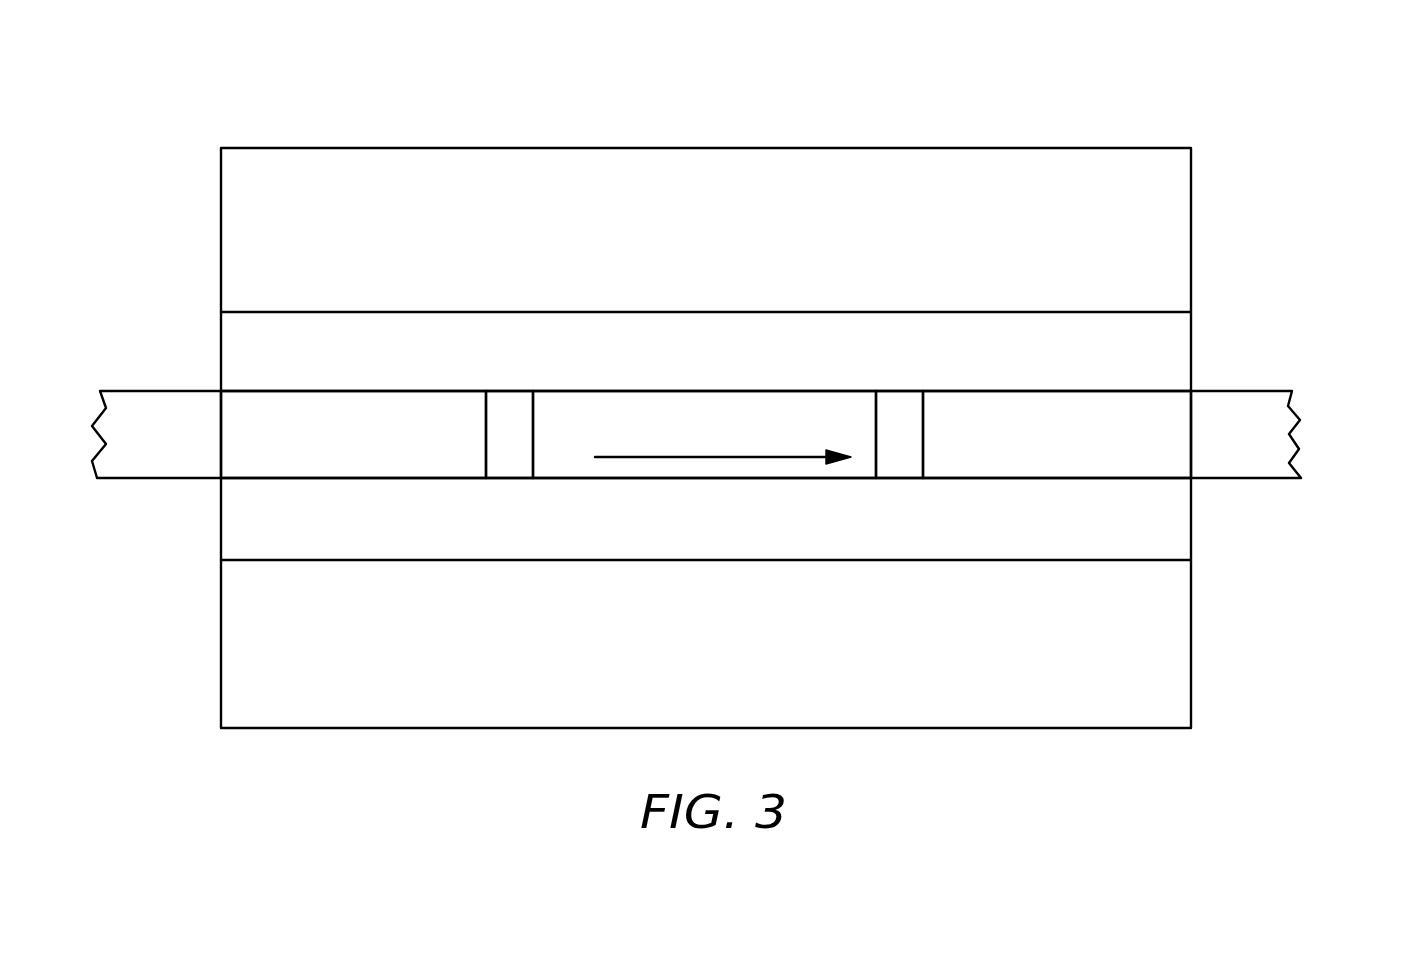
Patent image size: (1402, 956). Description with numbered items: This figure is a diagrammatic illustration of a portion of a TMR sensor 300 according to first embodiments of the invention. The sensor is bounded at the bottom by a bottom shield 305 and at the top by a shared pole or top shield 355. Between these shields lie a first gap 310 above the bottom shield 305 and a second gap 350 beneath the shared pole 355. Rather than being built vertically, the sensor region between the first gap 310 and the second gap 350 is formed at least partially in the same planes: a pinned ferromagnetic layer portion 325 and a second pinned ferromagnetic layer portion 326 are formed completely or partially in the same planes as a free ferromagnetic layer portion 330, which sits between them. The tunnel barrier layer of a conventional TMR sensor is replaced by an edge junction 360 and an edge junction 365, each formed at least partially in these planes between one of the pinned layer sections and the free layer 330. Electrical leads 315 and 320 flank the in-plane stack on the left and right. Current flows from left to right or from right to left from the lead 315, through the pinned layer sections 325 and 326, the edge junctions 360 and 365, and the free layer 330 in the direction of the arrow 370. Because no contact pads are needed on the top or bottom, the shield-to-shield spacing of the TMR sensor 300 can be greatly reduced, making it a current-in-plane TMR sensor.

The TMR sensor 300 is at (290, 131).
The bottom shield 305 is at (1191, 649).
The first gap 310 is at (1191, 538).
The electrical lead 315 is at (185, 410).
The electrical lead 320 is at (1297, 411).
The pinned ferromagnetic layer portion 325 is at (353, 435).
The pinned ferromagnetic layer portion 326 is at (1057, 434).
The free ferromagnetic layer portion 330 is at (803, 413).
The second gap 350 is at (1192, 363).
The shared pole or top shield 355 is at (1192, 229).
The edge junction 360 is at (508, 417).
The edge junction 365 is at (896, 420).
The arrow 370 is at (805, 461).